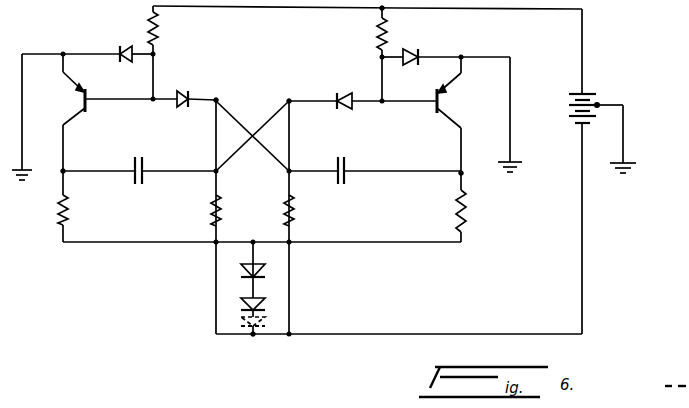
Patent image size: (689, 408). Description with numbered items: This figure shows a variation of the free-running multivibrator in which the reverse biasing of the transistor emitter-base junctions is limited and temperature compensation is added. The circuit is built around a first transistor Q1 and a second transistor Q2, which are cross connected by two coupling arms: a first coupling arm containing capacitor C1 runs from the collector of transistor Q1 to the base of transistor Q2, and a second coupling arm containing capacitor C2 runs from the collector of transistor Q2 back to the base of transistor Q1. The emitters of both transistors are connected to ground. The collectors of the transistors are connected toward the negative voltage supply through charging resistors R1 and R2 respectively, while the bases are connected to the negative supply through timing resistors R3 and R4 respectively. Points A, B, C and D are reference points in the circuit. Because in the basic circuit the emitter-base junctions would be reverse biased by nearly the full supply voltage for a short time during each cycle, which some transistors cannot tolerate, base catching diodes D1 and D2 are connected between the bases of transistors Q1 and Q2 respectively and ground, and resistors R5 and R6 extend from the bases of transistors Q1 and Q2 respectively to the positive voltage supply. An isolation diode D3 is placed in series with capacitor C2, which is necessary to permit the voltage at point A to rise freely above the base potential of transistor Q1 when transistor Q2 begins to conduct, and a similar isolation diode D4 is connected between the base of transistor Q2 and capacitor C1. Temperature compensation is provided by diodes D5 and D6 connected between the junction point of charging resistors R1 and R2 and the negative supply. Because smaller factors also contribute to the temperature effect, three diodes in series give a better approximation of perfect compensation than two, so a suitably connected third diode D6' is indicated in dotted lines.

The first transistor Q1 is at (62, 89).
The second transistor Q2 is at (454, 115).
The base catching diode D1 is at (123, 42).
The base catching diode D2 is at (415, 45).
The isolation diode D3 is at (185, 87).
The isolation diode D4 is at (348, 88).
The temperature compensating diode D5 is at (265, 270).
The temperature compensating diode D6 is at (265, 302).
The third diode D6' is at (267, 323).
The charging resistor R1 is at (77, 210).
The charging resistor R2 is at (474, 211).
The timing resistor R3 is at (229, 210).
The timing resistor R4 is at (303, 210).
The resistor R5 is at (166, 28).
The resistor R6 is at (369, 34).
The capacitor C1 is at (138, 160).
The capacitor C2 is at (340, 162).
The reference point A is at (224, 92).
The reference point B is at (470, 174).
The reference point C is at (55, 171).
The reference point D is at (281, 93).